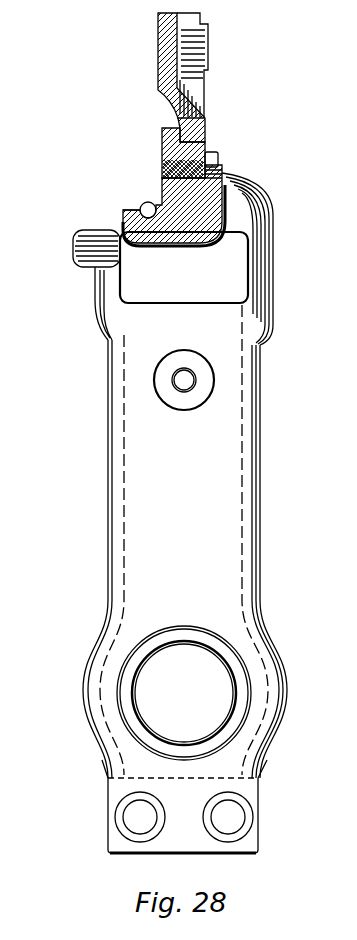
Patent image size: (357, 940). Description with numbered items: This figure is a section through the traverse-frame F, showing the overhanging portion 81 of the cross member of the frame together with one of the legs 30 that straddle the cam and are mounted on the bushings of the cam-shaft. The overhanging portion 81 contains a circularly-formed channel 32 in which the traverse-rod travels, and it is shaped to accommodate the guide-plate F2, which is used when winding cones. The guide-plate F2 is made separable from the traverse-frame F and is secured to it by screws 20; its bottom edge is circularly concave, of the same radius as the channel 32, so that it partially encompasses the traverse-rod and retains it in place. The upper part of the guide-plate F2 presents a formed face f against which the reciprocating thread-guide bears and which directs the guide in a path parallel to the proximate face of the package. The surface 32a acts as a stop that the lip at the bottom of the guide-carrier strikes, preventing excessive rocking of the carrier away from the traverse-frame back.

The formed face of guide-plate f is at (163, 48).
The guide-plate F2 is at (205, 118).
The screws 20 is at (220, 163).
The overhanging portion of cross member 81 is at (198, 246).
The channel 32 is at (146, 206).
The surface 32a is at (128, 212).
The traverse-frame F is at (173, 259).
The leg of traverse-frame 30 is at (185, 579).